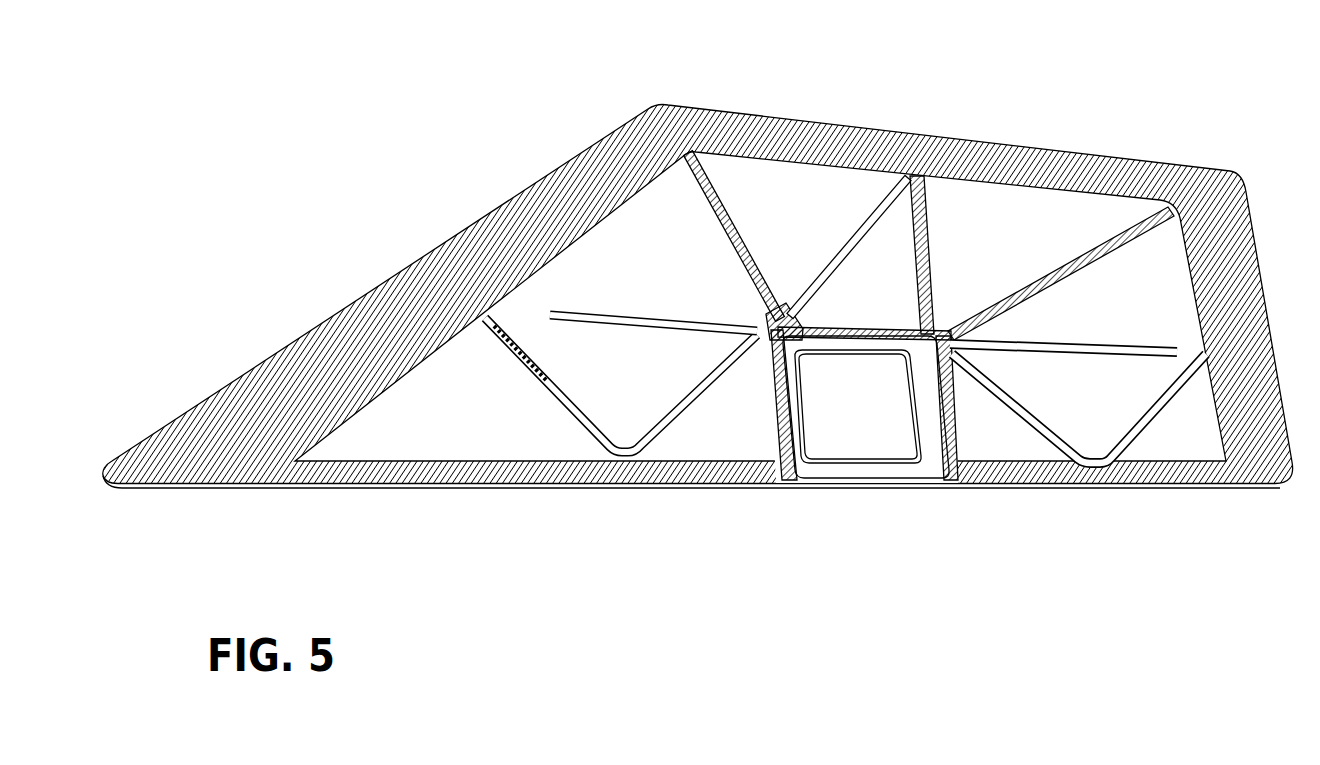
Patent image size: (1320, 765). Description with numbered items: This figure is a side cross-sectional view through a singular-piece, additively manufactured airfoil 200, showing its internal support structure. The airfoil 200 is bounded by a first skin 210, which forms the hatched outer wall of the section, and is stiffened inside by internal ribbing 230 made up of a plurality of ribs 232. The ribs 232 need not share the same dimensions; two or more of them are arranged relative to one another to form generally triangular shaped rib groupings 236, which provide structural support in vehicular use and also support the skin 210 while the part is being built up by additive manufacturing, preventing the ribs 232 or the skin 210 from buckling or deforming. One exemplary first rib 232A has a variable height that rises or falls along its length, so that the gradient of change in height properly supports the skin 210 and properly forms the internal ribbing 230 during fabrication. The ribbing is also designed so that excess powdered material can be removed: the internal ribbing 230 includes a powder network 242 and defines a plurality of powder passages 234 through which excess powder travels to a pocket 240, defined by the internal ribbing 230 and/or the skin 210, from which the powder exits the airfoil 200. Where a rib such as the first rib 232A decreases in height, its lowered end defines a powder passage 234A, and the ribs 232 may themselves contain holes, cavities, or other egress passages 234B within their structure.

The airfoil 200 is at (341, 158).
The first skin 210 is at (1055, 208).
The internal ribbing 230 is at (676, 449).
The ribs 232 is at (735, 222).
The first rib 232A is at (610, 314).
The powder passages 234 is at (955, 423).
The powder passage 234A is at (540, 320).
The egress passages 234B is at (808, 328).
The triangular shaped rib grouping 236 is at (636, 226).
The pocket 240 is at (847, 448).
The powder network 242 is at (875, 429).